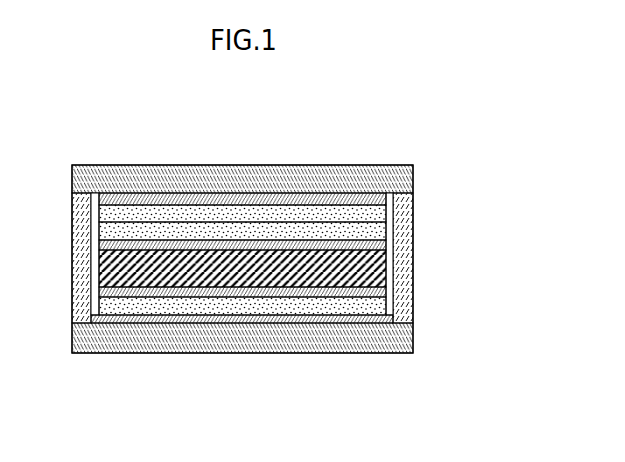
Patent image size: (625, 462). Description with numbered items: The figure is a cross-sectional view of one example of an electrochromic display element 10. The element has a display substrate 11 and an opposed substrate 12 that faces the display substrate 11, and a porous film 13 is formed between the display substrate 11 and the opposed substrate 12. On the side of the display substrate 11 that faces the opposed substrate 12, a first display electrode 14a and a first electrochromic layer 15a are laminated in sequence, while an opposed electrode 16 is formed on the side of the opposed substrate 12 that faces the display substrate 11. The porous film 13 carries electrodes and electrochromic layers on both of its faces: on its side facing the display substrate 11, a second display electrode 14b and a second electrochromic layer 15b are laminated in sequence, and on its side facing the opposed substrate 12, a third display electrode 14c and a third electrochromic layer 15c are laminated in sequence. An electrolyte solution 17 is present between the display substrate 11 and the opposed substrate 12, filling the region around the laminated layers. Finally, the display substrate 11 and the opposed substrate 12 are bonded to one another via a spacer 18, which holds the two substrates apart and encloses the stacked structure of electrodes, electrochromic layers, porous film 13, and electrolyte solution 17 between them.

The electrochromic display element 10 is at (65, 116).
The display substrate 11 is at (404, 181).
The opposed substrate 12 is at (404, 344).
The porous film 13 is at (404, 274).
The first display electrode 14a is at (404, 200).
The second display electrode 14b is at (404, 253).
The third display electrode 14c is at (404, 292).
The first electrochromic layer 15a is at (404, 217).
The second electrochromic layer 15b is at (404, 235).
The third electrochromic layer 15c is at (404, 310).
The opposed electrode 16 is at (404, 322).
The electrolyte solution 17 is at (392, 301).
The spacer 18 is at (388, 266).